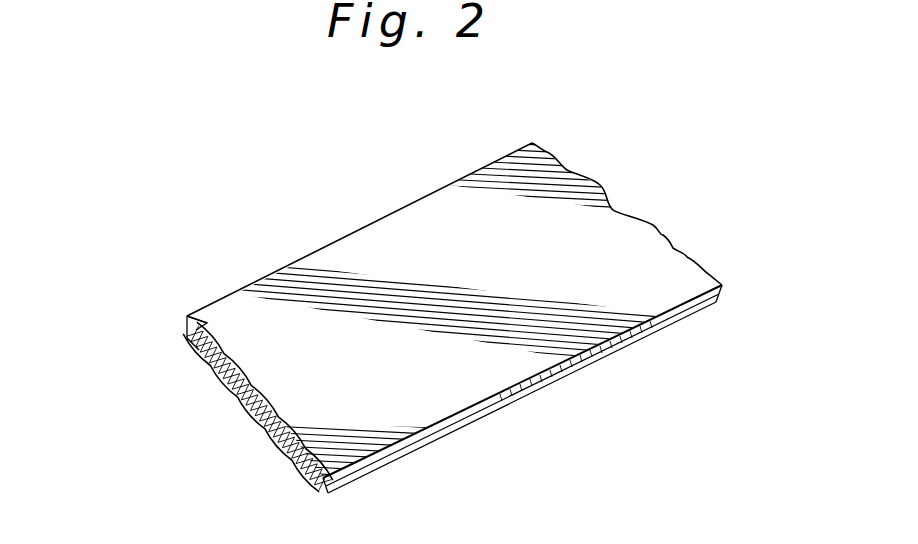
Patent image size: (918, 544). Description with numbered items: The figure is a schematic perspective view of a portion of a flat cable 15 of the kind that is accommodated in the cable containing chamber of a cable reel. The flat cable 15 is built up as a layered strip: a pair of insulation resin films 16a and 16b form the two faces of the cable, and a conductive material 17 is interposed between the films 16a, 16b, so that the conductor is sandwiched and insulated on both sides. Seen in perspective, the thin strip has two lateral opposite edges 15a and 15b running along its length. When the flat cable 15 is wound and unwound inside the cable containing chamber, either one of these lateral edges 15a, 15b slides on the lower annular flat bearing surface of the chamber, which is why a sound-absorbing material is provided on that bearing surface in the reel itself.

The flat cable 15 is at (319, 220).
The lateral edge 15a is at (452, 185).
The lateral edge 15b is at (552, 383).
The insulation resin film 16a is at (210, 306).
The insulation resin film 16b is at (199, 350).
The conductive material 17 is at (188, 338).